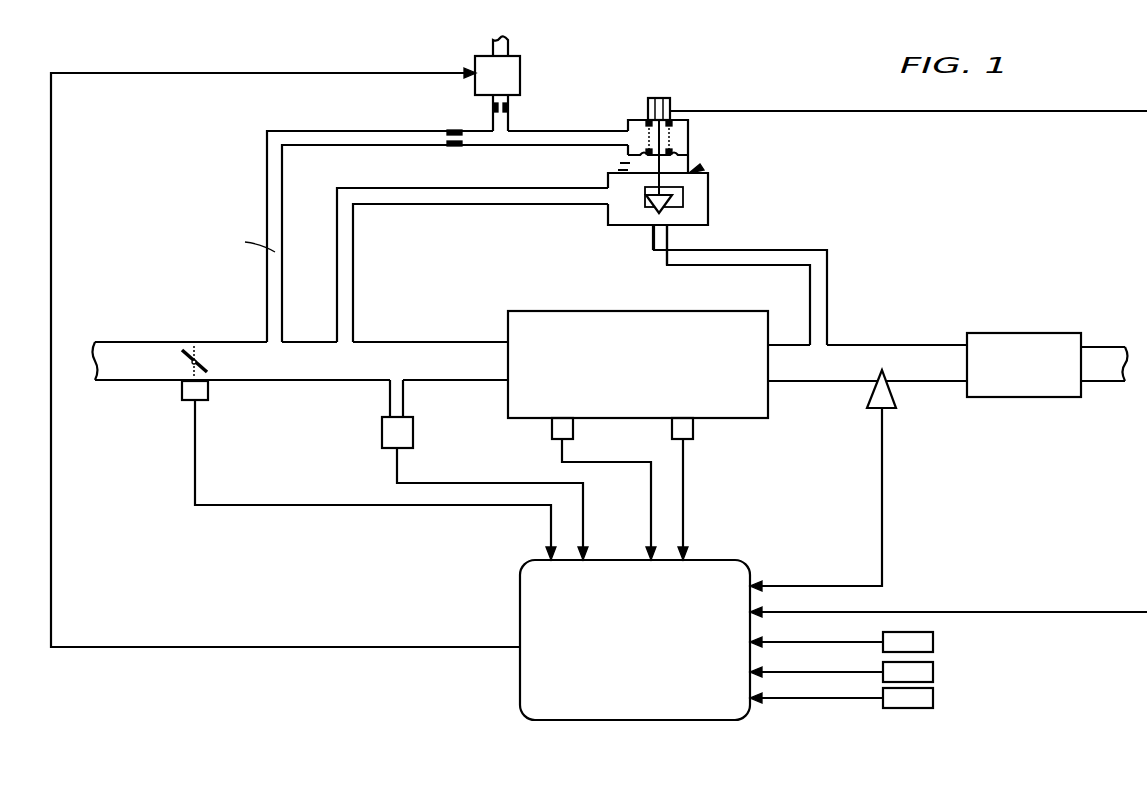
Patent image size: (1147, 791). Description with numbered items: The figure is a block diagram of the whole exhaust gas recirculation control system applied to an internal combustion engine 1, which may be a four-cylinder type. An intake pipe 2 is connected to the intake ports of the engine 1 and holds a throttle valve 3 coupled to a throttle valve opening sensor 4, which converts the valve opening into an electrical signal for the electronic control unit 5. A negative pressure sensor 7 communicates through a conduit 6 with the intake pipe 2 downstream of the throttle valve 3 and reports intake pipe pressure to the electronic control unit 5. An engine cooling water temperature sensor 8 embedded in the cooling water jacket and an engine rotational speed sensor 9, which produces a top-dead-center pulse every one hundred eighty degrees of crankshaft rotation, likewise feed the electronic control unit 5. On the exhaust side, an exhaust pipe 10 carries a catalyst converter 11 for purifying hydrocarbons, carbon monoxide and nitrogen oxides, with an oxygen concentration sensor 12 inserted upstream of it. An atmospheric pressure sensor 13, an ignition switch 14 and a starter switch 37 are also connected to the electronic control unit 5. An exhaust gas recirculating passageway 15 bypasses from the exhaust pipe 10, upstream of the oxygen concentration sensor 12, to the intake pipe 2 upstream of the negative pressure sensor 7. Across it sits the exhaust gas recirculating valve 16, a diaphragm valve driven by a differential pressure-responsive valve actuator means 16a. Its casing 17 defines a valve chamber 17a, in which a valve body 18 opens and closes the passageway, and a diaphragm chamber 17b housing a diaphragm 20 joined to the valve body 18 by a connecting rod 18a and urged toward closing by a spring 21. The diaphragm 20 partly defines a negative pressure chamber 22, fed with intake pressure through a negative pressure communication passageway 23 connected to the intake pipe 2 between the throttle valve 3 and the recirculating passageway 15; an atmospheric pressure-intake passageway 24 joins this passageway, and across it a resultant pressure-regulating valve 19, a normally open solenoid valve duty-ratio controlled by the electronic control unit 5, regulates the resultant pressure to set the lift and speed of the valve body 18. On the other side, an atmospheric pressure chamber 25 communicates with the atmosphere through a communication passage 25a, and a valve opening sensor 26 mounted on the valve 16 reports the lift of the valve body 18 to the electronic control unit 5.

The internal combustion engine 1 is at (677, 310).
The intake pipe 2 is at (276, 377).
The throttle valve 3 is at (183, 357).
The throttle valve opening sensor 4 is at (210, 390).
The electronic control unit 5 is at (728, 568).
The conduit 6 is at (405, 398).
The negative pressure sensor 7 is at (415, 435).
The engine cooling water temperature sensor 8 is at (574, 427).
The engine rotational speed sensor 9 is at (693, 427).
The exhaust pipe 10 is at (927, 345).
The catalyst converter 11 is at (1026, 332).
The oxygen concentration sensor 12 is at (895, 398).
The atmospheric pressure sensor 13 is at (935, 642).
The ignition switch 14 is at (935, 672).
The starter switch 37 is at (935, 698).
The exhaust gas recirculating passageway 15 is at (490, 188).
The exhaust gas recirculating valve 16 is at (702, 168).
The valve actuator means 16a is at (690, 137).
The casing 17 is at (608, 217).
The valve chamber 17a is at (690, 183).
The diaphragm chamber 17b is at (682, 130).
The valve body 18 is at (683, 200).
The connecting rod 18a is at (652, 182).
The resultant pressure-regulating valve 19 is at (520, 73).
The diaphragm 20 is at (680, 148).
The spring 21 is at (672, 122).
The negative pressure chamber 22 is at (637, 120).
The negative pressure communication passageway 23 is at (283, 177).
The atmospheric pressure-intake passageway 24 is at (508, 46).
The atmospheric pressure chamber 25 is at (628, 157).
The communication passage 25a is at (620, 164).
The valve opening sensor 26 is at (664, 98).